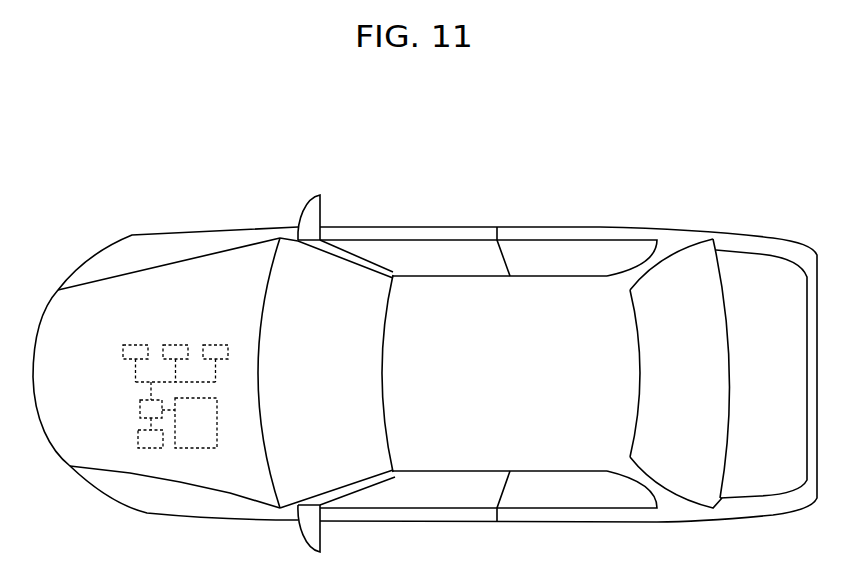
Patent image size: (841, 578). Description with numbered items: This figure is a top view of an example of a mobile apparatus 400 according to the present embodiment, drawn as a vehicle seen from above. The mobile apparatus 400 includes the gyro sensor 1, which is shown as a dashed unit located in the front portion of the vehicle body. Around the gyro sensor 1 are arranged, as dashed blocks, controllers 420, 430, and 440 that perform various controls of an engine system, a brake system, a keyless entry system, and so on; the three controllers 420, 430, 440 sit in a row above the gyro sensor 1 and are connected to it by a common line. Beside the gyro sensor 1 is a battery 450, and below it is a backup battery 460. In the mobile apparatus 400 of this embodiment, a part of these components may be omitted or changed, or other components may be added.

The mobile apparatus 400 is at (537, 168).
The controller 420 is at (137, 343).
The controller 430 is at (172, 343).
The controller 440 is at (222, 343).
The gyro sensor 1 is at (138, 405).
The battery 450 is at (203, 449).
The backup battery 460 is at (138, 439).